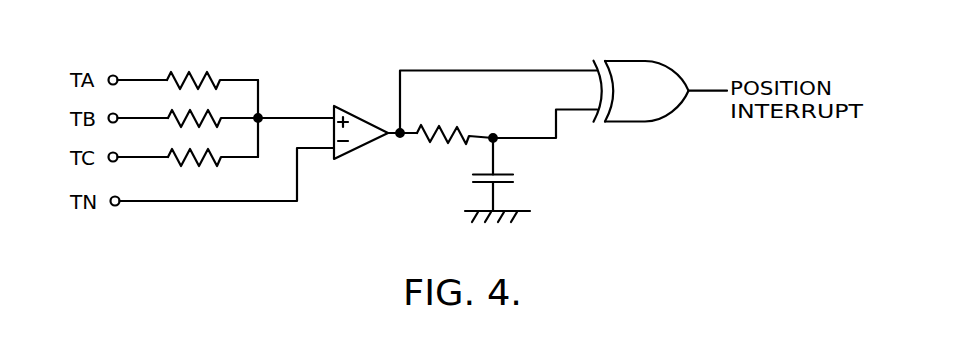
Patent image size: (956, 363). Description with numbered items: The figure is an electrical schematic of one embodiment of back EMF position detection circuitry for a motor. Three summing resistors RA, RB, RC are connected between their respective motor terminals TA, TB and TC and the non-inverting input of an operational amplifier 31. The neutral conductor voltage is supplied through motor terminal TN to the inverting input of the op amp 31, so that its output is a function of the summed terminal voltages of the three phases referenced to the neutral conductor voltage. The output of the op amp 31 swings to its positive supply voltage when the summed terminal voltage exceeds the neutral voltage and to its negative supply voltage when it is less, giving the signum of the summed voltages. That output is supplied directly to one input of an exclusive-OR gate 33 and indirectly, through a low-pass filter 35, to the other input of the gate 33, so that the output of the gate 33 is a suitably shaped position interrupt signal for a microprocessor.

The operational amplifier 31 is at (364, 120).
The exclusive-OR gate 33 is at (697, 24).
The low-pass filter 35 is at (516, 117).
The summing resistor RA is at (200, 75).
The summing resistor RB is at (201, 115).
The summing resistor RC is at (201, 152).